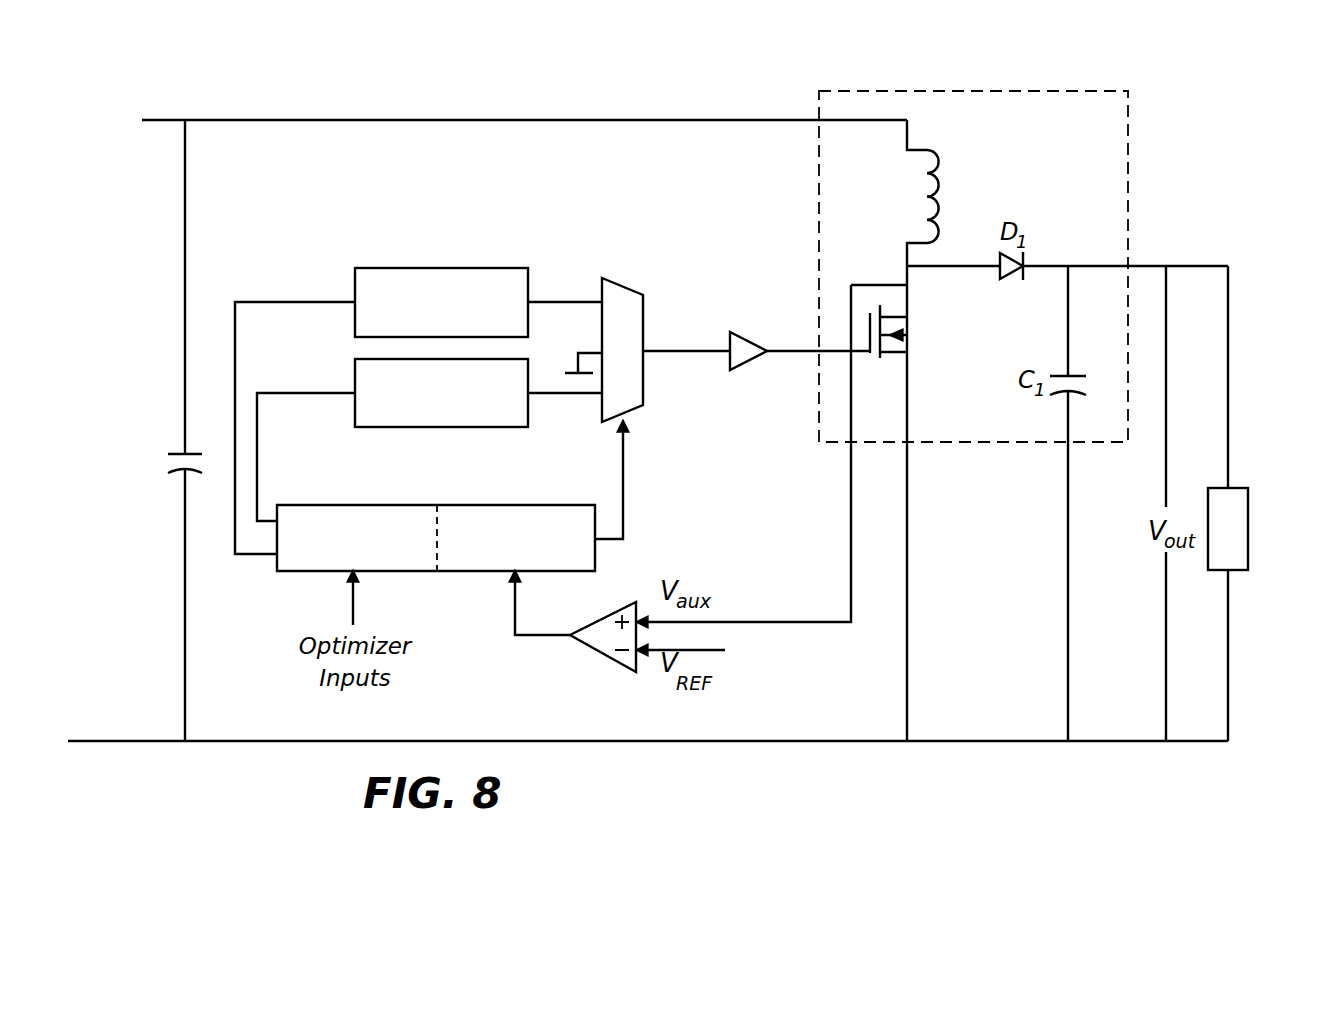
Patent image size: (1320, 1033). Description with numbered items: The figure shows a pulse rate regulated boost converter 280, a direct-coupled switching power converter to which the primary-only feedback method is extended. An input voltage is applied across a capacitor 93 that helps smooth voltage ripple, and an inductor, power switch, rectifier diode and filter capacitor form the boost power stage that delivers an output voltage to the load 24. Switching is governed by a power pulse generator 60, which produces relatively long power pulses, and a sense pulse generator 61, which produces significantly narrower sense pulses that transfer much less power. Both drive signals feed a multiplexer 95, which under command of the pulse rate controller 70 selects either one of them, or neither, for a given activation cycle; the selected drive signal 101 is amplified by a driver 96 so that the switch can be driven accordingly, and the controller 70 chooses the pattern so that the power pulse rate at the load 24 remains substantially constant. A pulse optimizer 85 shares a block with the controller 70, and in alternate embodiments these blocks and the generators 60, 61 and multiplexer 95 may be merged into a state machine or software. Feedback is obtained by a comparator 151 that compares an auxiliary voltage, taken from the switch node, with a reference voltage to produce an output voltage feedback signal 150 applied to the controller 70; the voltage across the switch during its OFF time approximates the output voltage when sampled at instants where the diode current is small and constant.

The pulse rate regulated boost converter 280 is at (444, 84).
The power pulse generator 60 is at (465, 268).
The sense pulse generator 61 is at (455, 427).
The multiplexer 95 is at (615, 278).
The drive signal 101 is at (690, 350).
The driver 96 is at (738, 332).
The pulse optimizer 85 is at (343, 505).
The pulse rate controller 70 is at (596, 557).
The output voltage feedback signal 150 is at (515, 612).
The comparator 151 is at (600, 657).
The capacitor 93 is at (170, 455).
The load 24 is at (1249, 533).